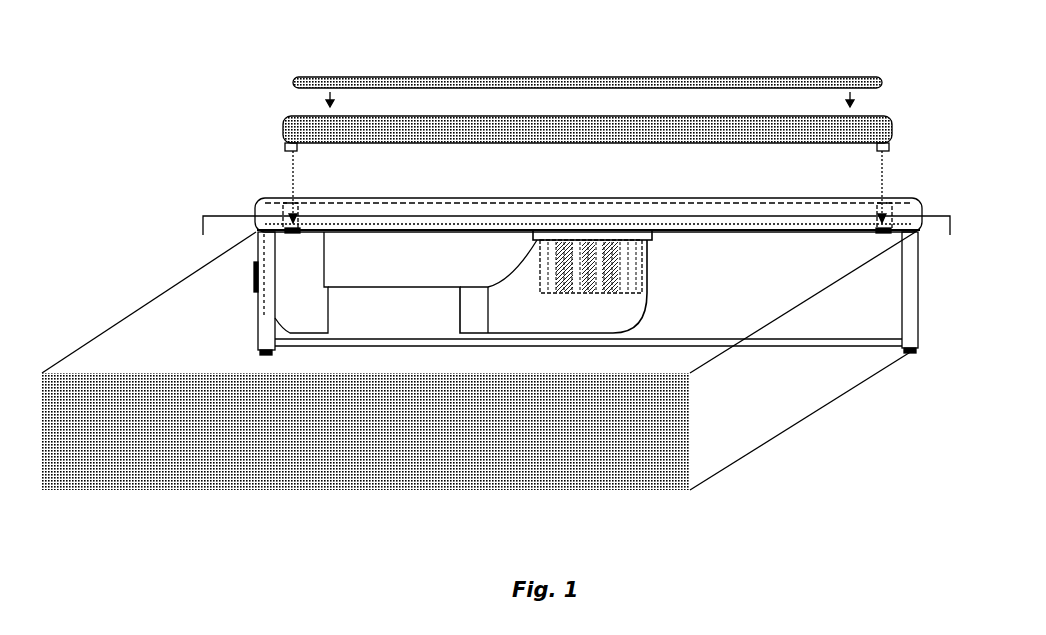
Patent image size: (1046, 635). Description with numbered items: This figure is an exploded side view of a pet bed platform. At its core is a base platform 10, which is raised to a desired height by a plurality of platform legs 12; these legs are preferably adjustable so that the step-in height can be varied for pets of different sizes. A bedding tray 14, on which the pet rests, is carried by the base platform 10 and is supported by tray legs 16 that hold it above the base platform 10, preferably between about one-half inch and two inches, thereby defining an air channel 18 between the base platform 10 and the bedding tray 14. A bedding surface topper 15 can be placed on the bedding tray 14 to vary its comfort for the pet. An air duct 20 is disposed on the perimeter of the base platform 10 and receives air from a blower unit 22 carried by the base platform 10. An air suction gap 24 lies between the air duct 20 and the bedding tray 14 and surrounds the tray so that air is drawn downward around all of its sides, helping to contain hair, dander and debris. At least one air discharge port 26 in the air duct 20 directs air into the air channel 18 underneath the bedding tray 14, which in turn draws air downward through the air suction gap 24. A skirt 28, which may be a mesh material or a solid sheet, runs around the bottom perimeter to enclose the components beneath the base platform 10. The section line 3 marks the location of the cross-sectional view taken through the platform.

The base platform 10 is at (785, 232).
The platform legs 12 is at (263, 332).
The bedding tray 14 is at (889, 121).
The bedding surface topper 15 is at (832, 75).
The tray legs 16 is at (284, 143).
The air channel 18 is at (727, 227).
The air duct 20 is at (262, 200).
The blower unit 22 is at (656, 291).
The air suction gap 24 is at (289, 210).
The air discharge port 26 is at (282, 227).
The skirt 28 is at (338, 453).
The section line 3 is at (577, 242).